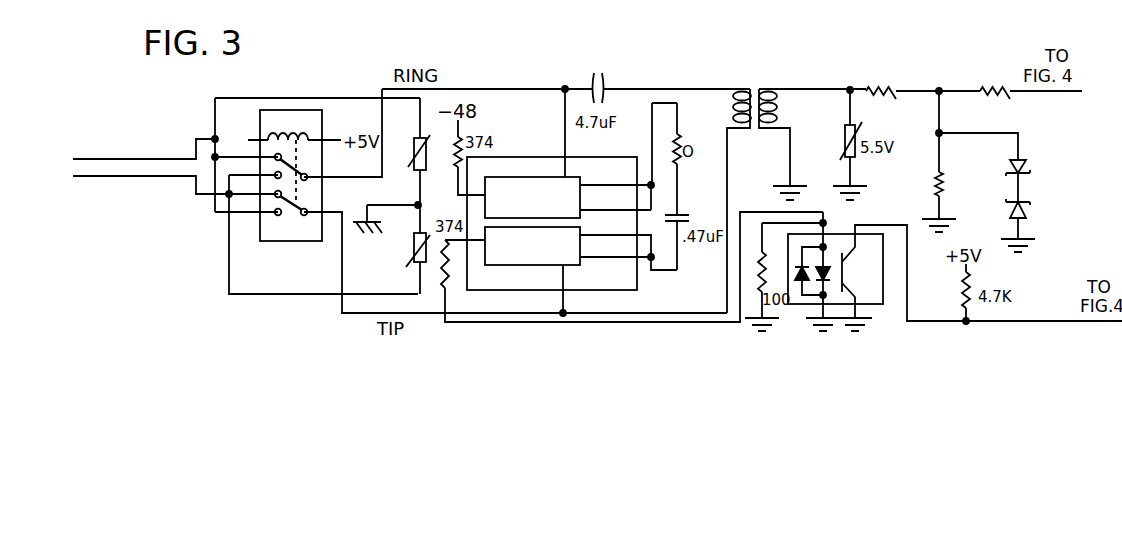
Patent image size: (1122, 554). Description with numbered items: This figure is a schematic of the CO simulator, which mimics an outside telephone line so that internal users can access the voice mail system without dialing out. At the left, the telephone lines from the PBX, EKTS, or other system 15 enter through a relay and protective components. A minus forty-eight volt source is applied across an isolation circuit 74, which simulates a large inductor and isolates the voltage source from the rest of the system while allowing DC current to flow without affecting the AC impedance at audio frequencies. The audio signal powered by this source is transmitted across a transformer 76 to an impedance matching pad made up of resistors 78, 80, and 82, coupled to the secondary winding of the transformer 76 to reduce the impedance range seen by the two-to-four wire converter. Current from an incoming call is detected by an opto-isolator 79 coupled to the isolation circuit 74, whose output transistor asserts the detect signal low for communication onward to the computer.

The system 15 is at (175, 146).
The isolation circuit 74 is at (535, 157).
The transformer 76 is at (752, 86).
The resistor 78 is at (888, 77).
The opto-isolator 79 is at (883, 280).
The resistor 80 is at (934, 178).
The resistor 82 is at (994, 84).